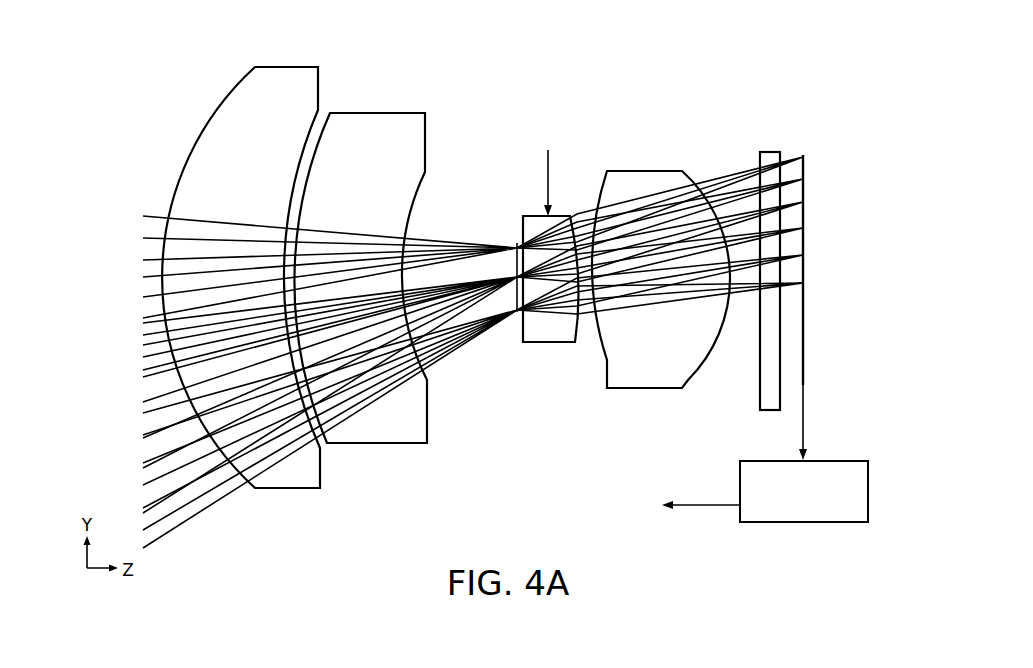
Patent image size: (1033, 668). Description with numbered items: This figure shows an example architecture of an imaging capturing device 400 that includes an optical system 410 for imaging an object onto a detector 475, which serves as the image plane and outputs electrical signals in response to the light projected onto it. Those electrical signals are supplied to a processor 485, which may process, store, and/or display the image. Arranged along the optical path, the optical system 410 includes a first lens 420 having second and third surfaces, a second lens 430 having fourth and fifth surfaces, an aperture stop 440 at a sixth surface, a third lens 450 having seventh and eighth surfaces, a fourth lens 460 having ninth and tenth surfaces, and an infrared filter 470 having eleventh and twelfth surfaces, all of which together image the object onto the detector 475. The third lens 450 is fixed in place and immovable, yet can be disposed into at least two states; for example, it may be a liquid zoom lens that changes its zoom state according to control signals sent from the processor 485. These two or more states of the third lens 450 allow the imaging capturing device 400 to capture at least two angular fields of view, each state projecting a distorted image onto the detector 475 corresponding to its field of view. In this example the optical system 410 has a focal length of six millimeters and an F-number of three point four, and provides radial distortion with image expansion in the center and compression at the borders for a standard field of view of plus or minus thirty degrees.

The imaging capturing device 400 is at (718, 58).
The optical system 410 is at (506, 100).
The first lens 420 is at (262, 168).
The second lens 430 is at (384, 191).
The aperture stop 440 is at (513, 318).
The third lens 450 is at (528, 337).
The fourth lens 460 is at (668, 378).
The infrared (IR) filter 470 is at (757, 376).
The detector 475 is at (807, 285).
The processor 485 is at (872, 494).